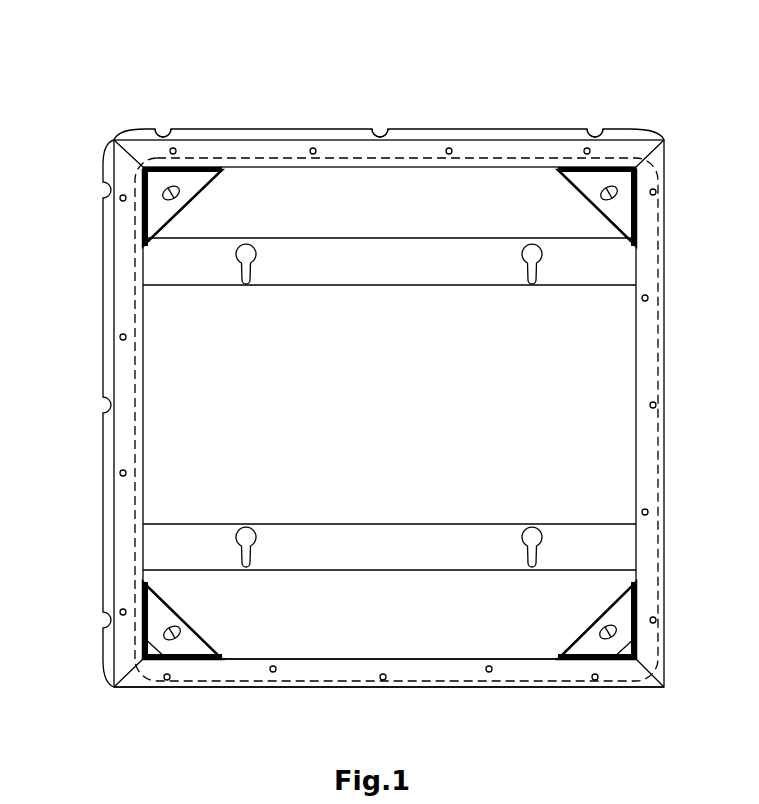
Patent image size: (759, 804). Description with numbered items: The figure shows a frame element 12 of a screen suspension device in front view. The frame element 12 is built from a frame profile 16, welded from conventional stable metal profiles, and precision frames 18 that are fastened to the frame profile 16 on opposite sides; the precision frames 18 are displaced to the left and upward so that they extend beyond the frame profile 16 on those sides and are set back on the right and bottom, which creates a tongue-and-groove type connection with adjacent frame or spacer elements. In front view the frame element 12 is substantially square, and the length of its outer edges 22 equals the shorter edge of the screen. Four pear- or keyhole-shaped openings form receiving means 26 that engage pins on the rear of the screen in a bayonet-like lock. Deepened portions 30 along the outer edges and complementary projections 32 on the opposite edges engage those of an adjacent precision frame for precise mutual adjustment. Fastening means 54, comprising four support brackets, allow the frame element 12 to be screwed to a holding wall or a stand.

The frame element 12 is at (483, 107).
The frame profile 16 is at (483, 688).
The precision frame 18 is at (260, 128).
The outer edges 22 is at (427, 128).
The receiving means 26 is at (533, 257).
The deepened portions 30 is at (380, 128).
The projections 32 is at (656, 405).
The fastening means 54 is at (177, 187).